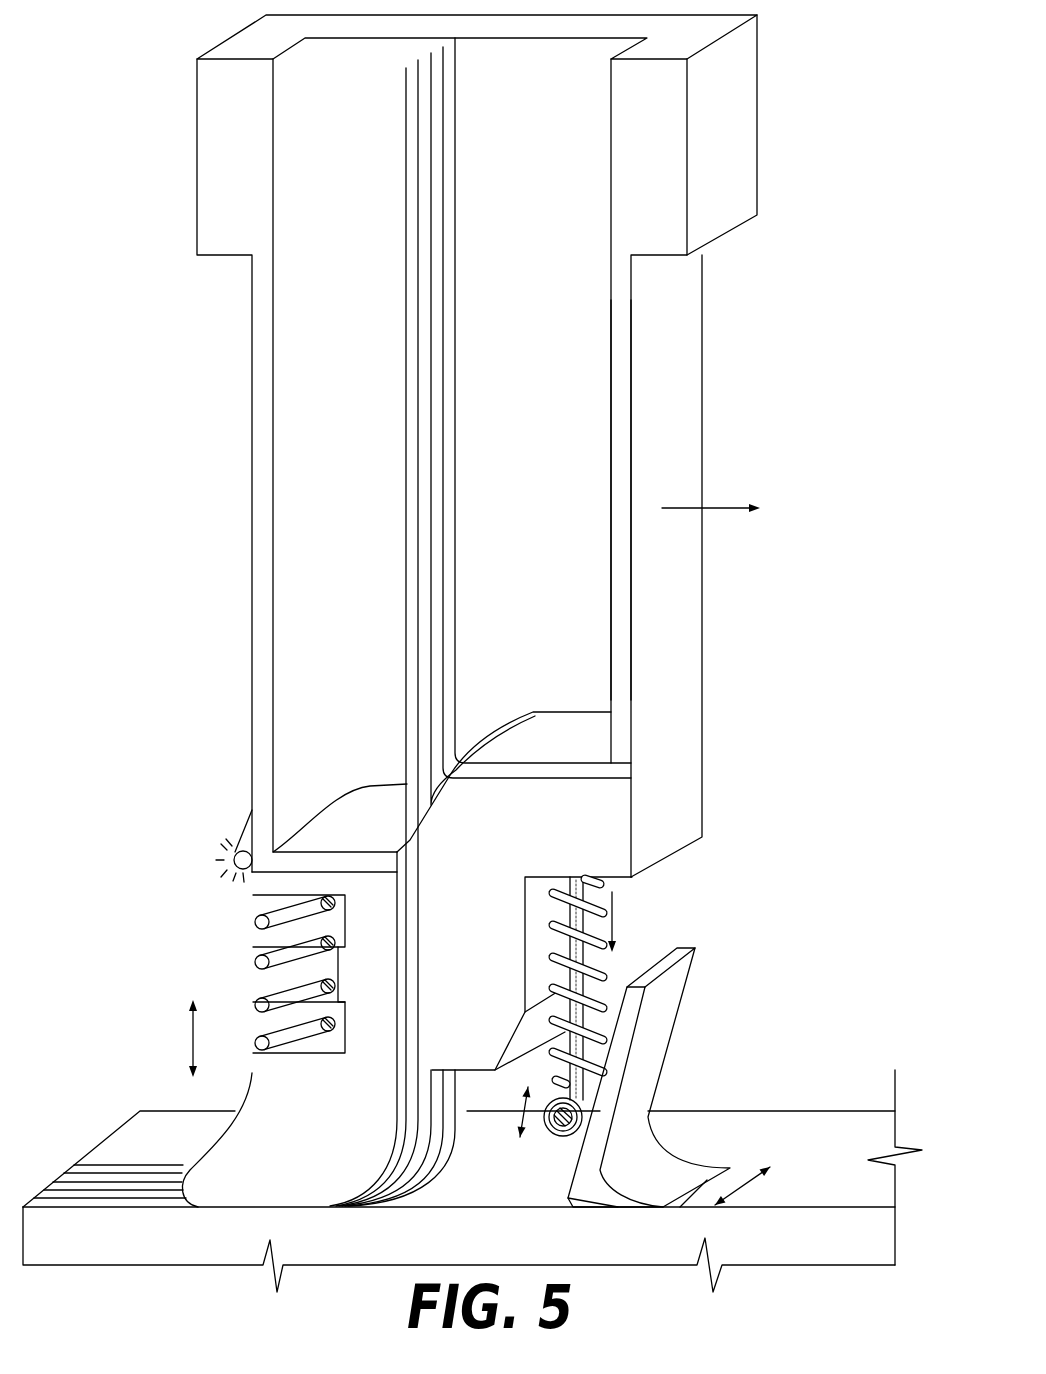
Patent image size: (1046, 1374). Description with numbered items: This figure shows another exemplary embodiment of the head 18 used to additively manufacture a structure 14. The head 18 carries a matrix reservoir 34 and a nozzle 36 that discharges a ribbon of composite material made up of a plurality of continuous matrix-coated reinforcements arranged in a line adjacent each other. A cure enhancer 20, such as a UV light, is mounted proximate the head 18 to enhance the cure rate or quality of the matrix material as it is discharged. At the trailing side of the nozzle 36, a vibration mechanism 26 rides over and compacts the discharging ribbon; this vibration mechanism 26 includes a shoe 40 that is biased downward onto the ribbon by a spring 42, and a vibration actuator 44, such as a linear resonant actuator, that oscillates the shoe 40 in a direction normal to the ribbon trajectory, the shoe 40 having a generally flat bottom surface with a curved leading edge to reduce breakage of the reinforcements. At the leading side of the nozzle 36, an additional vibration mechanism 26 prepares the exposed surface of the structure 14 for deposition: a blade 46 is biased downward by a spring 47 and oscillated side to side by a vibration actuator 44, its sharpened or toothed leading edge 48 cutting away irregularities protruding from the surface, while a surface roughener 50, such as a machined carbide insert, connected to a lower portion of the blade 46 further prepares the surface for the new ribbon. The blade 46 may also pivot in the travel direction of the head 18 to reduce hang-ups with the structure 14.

The structure 14 is at (504, 1245).
The head 18 is at (712, 316).
The cure enhancer 20 is at (235, 855).
The vibration mechanism 26 is at (205, 959).
The matrix reservoir 34 is at (622, 462).
The nozzle 36 is at (483, 985).
The shoe 40 is at (297, 1158).
The spring 42 is at (312, 980).
The vibration actuator 44 is at (323, 1043).
The blade 46 is at (633, 1103).
The spring 47 is at (602, 970).
The leading edge 48 is at (709, 1180).
The surface roughener 50 is at (575, 1208).